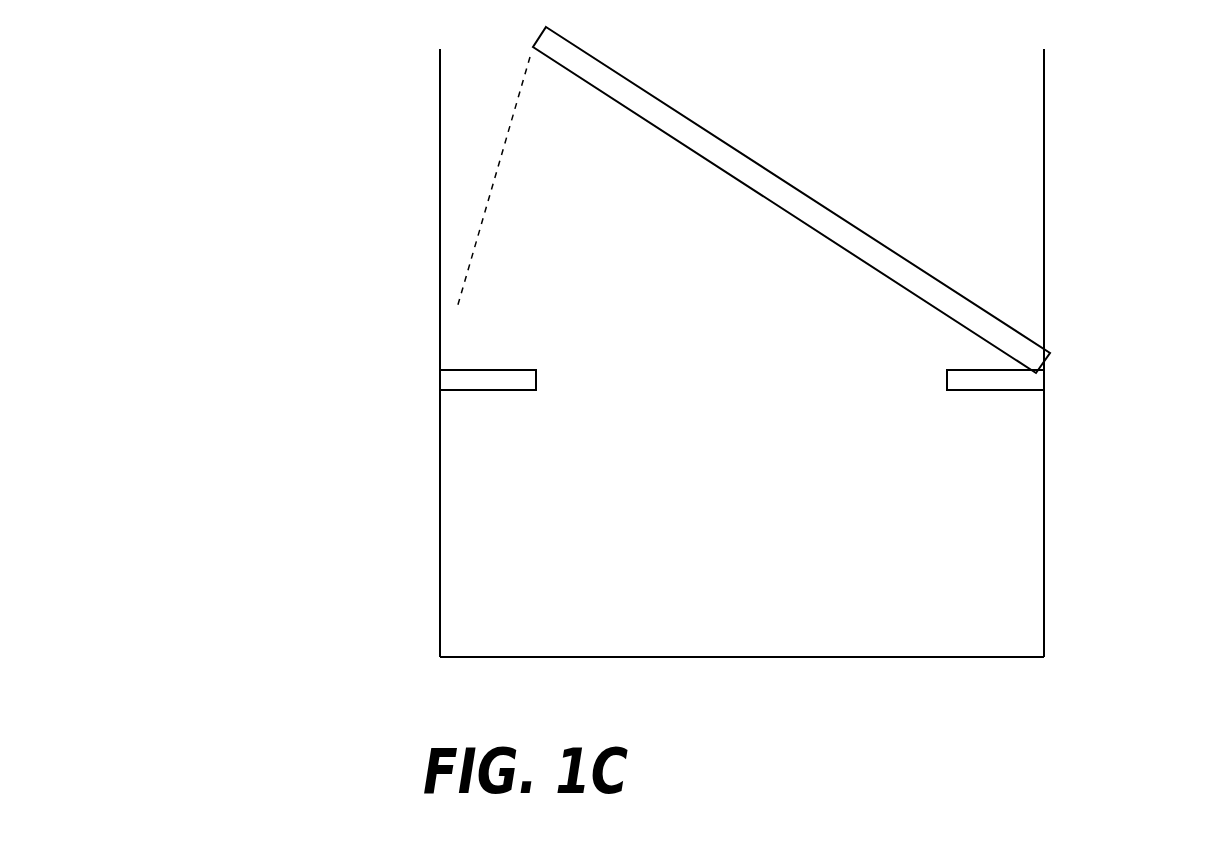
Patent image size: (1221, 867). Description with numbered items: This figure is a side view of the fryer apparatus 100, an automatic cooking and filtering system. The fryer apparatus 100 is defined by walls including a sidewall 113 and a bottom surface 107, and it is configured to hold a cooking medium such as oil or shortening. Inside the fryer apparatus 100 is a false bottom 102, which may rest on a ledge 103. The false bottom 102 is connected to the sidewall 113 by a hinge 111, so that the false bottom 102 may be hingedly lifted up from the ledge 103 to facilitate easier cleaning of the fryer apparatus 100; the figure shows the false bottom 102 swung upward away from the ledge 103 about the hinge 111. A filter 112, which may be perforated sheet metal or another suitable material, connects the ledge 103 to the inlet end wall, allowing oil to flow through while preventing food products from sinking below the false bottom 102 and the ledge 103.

The fryer apparatus 100 is at (735, 399).
The false bottom 102 is at (765, 155).
The ledge 103 is at (503, 392).
The bottom surface 107 is at (993, 658).
The hinge 111 is at (1058, 377).
The filter 112 is at (425, 353).
The sidewall 113 is at (1058, 200).